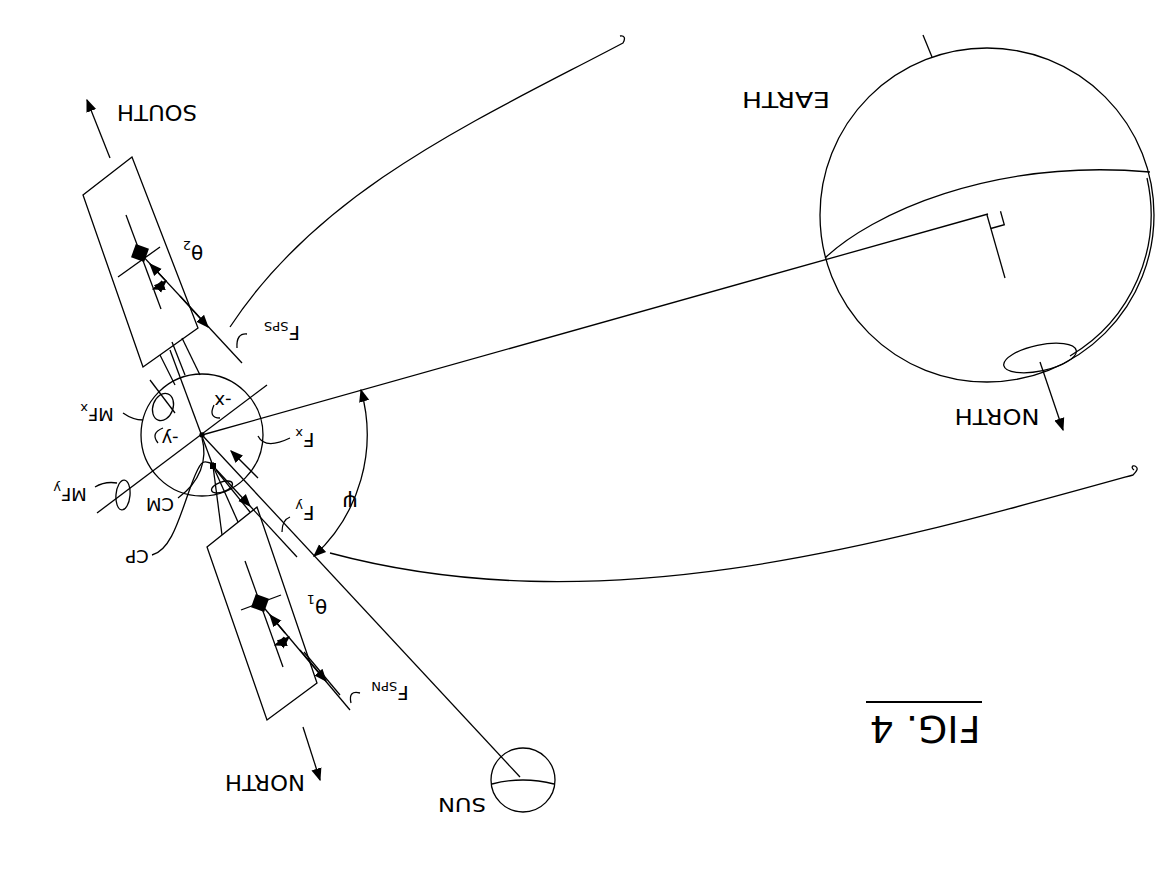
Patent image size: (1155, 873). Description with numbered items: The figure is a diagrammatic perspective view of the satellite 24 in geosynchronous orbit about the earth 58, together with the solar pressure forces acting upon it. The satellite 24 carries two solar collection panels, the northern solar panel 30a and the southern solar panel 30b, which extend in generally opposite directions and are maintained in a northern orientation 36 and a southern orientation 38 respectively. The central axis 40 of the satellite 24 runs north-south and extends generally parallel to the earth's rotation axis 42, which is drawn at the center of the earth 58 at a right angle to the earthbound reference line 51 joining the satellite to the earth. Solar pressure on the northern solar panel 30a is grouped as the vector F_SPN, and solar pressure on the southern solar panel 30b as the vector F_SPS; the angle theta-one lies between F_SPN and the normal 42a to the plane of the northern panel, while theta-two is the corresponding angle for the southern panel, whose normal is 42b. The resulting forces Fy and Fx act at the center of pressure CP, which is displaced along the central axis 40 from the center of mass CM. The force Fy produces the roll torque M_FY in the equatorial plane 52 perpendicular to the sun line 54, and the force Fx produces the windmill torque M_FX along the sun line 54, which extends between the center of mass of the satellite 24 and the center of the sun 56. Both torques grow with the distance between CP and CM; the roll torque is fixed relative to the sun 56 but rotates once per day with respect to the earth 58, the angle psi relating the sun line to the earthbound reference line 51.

The satellite 24 is at (120, 627).
The northern solar panel 30a is at (252, 680).
The southern solar panel 30b is at (153, 202).
The northern orientation 36 is at (298, 745).
The southern orientation 38 is at (103, 148).
The central axis 40 is at (212, 520).
The earth's rotation axis 42 is at (1003, 274).
The normal to the plane of the solar panel 42a is at (341, 704).
The south array drive axis 42b is at (180, 312).
The earthbound reference line 51 is at (470, 358).
The equatorial plane 52 is at (368, 190).
The sun line 54 is at (452, 700).
The sun 56 is at (492, 778).
The earth 58 is at (872, 330).